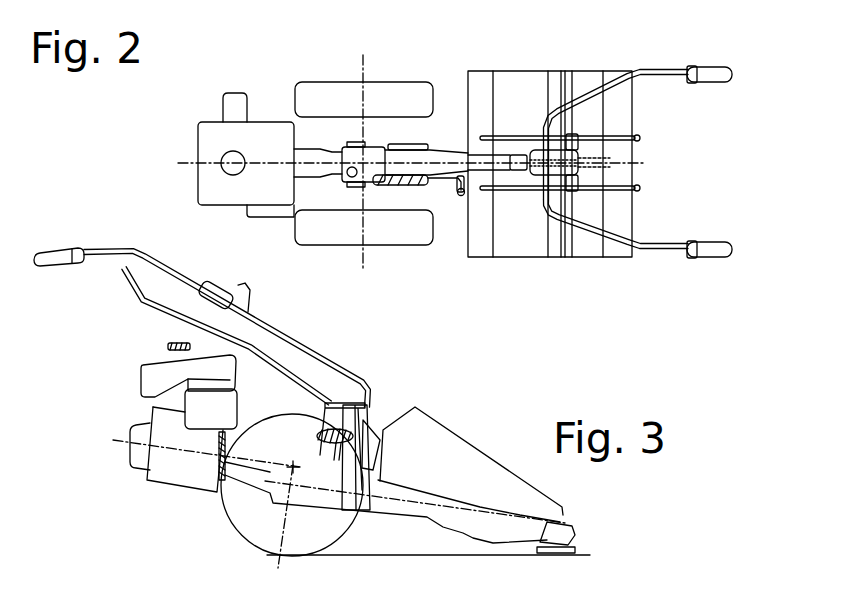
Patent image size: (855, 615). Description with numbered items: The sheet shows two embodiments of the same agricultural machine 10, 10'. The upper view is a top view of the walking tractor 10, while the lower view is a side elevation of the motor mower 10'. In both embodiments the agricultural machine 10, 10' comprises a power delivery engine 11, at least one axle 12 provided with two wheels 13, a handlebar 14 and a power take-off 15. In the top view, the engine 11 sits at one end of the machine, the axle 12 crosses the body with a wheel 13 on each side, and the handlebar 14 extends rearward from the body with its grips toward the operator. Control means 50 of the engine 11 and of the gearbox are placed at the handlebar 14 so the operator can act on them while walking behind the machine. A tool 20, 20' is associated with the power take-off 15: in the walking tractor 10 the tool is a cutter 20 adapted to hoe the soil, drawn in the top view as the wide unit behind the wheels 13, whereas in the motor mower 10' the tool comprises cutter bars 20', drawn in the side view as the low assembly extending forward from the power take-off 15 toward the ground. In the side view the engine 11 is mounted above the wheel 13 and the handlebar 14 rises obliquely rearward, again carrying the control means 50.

In FIG. 2, the agricultural machine 10 is at (200, 50).
In FIG. 3, the agricultural machine 10' is at (319, 557).
In FIG. 2, the power delivery engine 11 is at (210, 143).
In FIG. 3, the power delivery engine 11 is at (143, 478).
In FIG. 2, the axle 12 is at (373, 128).
In FIG. 2, the wheels 13 is at (325, 96).
In FIG. 3, the wheels 13 is at (248, 525).
In FIG. 2, the handlebar 14 is at (702, 75).
In FIG. 3, the handlebar 14 is at (60, 263).
In FIG. 2, the power take-off 15 is at (460, 200).
In FIG. 3, the power take-off 15 is at (360, 522).
In FIG. 2, the cutter 20 is at (554, 190).
In FIG. 3, the cutter bars 20' is at (471, 461).
In FIG. 2, the control means 50 is at (640, 190).
In FIG. 3, the control means 50 is at (143, 298).